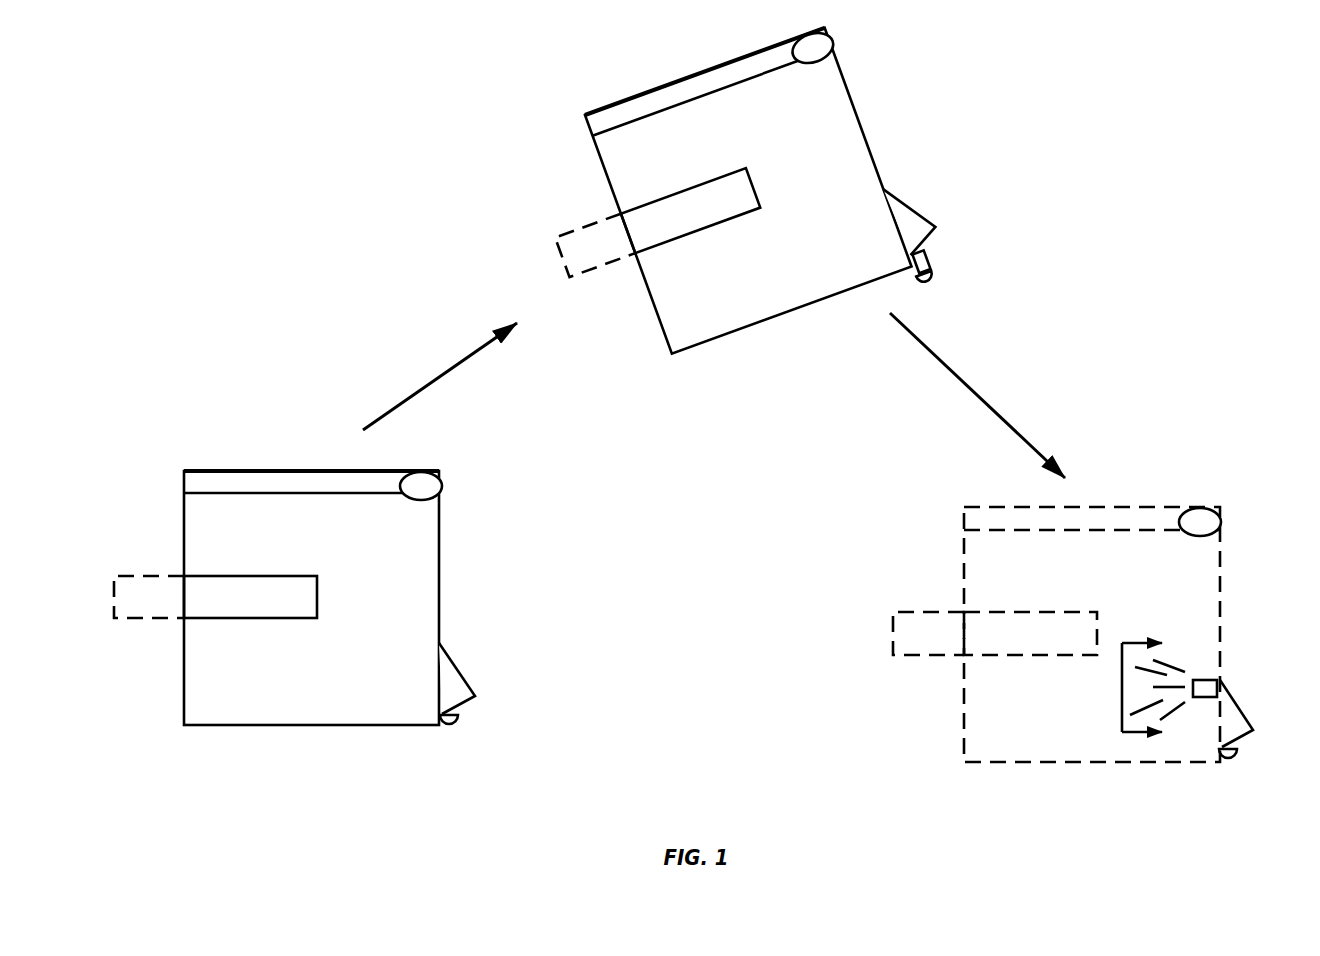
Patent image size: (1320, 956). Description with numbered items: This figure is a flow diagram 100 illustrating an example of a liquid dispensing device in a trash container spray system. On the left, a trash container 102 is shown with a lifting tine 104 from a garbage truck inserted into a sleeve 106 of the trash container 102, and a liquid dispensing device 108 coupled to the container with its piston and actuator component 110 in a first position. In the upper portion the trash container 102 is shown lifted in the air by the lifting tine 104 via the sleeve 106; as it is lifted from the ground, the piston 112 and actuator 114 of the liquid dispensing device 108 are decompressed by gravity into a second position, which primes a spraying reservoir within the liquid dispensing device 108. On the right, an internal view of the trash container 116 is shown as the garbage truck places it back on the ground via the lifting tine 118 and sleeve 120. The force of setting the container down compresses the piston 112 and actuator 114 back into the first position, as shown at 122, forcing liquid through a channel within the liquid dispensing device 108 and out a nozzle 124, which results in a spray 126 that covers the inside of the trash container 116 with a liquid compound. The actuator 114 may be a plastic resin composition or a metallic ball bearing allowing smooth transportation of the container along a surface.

The flow diagram 100 is at (217, 175).
The trash container 102 is at (217, 716).
The lifting tine 104 is at (162, 620).
The sleeve 106 is at (215, 610).
The liquid dispensing device 108 is at (480, 688).
The piston and actuator component 110 is at (463, 723).
The piston 112 is at (930, 260).
The actuator 114 is at (935, 287).
The trash container (internal view) 116 is at (1004, 748).
The lifting tine 118 is at (928, 610).
The sleeve 120 is at (997, 643).
The piston and actuator in first position 122 is at (1240, 764).
The nozzle 124 is at (1200, 677).
The spray 126 is at (1122, 696).